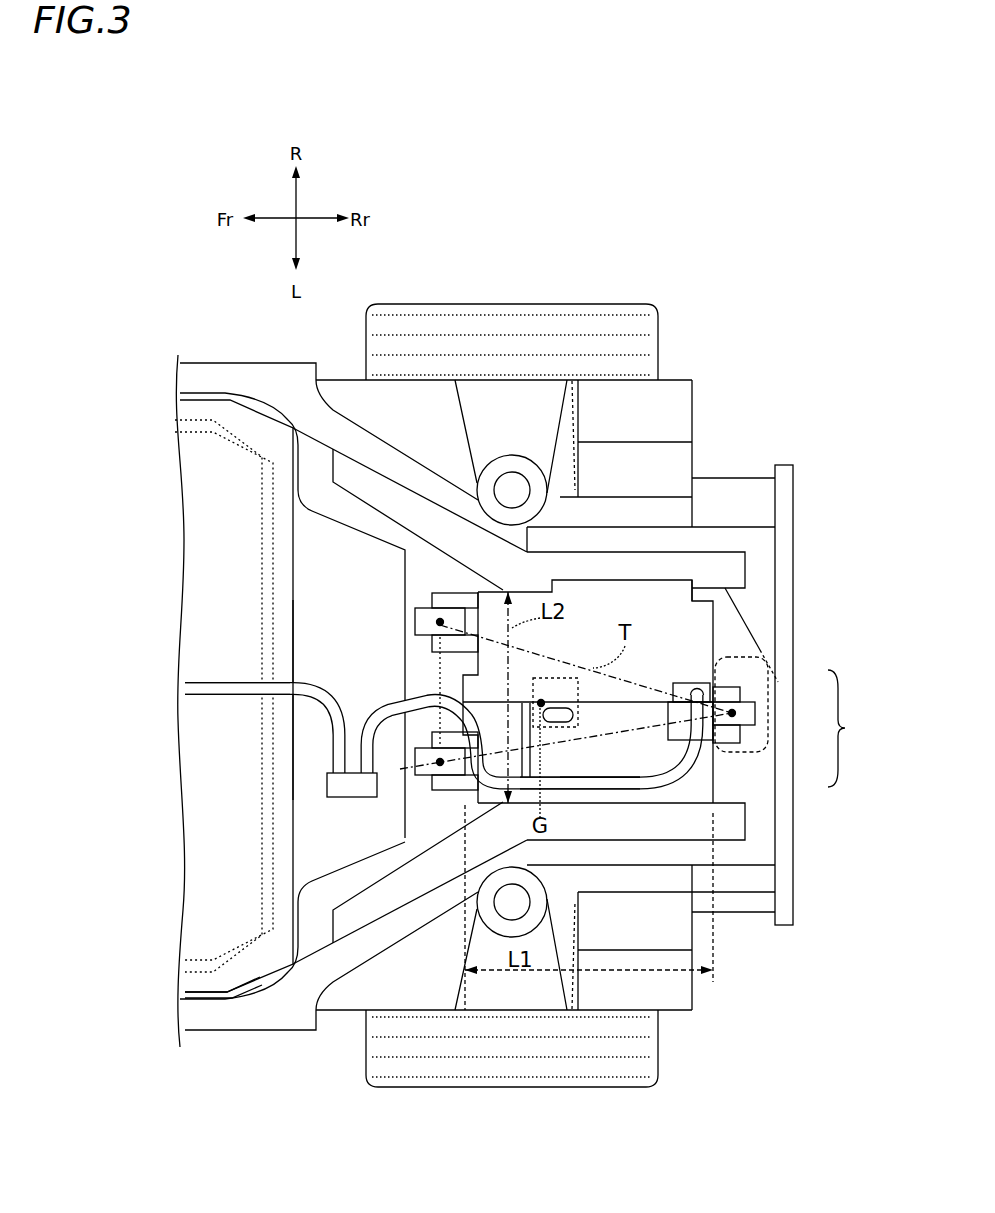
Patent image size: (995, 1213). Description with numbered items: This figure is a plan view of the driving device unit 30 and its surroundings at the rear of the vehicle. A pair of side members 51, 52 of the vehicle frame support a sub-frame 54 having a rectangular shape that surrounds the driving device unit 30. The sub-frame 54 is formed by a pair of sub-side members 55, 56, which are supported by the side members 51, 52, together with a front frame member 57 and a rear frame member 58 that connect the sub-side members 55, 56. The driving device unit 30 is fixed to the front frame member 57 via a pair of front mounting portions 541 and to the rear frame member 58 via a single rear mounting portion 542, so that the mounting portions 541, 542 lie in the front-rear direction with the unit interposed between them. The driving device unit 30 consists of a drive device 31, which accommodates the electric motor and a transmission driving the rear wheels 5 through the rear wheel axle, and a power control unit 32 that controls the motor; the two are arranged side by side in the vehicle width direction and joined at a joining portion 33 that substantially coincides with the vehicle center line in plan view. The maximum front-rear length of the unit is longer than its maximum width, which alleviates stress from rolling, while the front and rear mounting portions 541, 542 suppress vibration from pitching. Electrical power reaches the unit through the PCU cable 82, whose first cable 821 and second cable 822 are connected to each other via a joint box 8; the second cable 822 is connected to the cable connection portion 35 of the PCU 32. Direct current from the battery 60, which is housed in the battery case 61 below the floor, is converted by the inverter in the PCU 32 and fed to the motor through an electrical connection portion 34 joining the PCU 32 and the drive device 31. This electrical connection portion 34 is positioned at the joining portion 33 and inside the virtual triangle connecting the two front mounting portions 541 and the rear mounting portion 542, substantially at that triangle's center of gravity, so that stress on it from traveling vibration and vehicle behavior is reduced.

The rear wheel 5 is at (658, 1043).
The joint box 8 is at (345, 800).
The driving device unit 30 is at (848, 728).
The drive device 31 is at (683, 775).
The power control unit (PCU) 32 is at (757, 634).
The joining portion 33 is at (600, 707).
The electrical connection portion 34 is at (541, 703).
The cable connection portion 35 is at (695, 688).
The side member 51 is at (268, 362).
The side member 52 is at (208, 1032).
The sub-frame 54 is at (757, 632).
The sub-side member 55 is at (632, 542).
The sub-side member 56 is at (663, 842).
The front frame member 57 is at (380, 842).
The rear frame member 58 is at (740, 614).
The battery 60 is at (277, 832).
The battery case 61 is at (242, 990).
The PCU cable 82 is at (490, 771).
The front mounting portion 541 is at (412, 768).
The rear mounting portion 542 is at (724, 710).
The first cable 821 is at (210, 697).
The second cable 822 is at (683, 782).